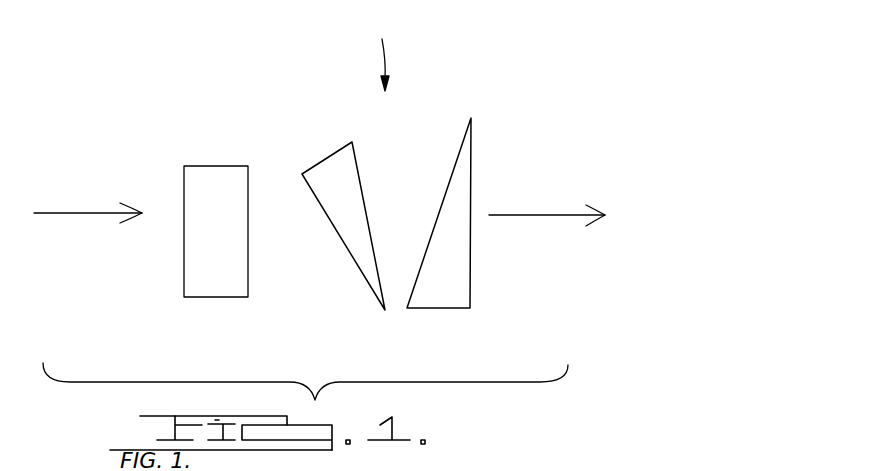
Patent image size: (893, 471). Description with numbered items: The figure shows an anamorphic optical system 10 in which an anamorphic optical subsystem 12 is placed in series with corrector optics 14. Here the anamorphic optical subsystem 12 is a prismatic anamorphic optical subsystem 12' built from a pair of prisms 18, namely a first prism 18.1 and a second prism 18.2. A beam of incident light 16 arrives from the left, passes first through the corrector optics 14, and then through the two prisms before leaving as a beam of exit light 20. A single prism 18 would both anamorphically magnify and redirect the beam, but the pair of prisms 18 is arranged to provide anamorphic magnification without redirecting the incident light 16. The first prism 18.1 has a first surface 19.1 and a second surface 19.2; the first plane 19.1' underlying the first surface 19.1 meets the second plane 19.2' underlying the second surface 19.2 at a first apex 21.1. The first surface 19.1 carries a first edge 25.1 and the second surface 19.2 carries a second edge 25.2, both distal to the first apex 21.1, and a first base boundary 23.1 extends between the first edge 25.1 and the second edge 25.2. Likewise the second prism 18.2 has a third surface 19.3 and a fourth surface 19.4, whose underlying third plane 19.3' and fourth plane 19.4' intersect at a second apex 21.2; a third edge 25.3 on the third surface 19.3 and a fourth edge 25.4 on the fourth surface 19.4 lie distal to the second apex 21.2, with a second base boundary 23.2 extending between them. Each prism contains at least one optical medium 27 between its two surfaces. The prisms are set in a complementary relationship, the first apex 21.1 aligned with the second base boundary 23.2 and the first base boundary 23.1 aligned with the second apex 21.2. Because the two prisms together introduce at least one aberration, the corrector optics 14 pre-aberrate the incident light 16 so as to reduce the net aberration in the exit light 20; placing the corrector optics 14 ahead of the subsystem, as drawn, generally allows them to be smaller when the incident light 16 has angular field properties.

The anamorphic optical system 10 is at (660, 96).
The anamorphic optical subsystem 12 is at (384, 54).
The prismatic anamorphic optical subsystem 12' is at (383, 59).
The corrector optics 14 is at (184, 266).
The beam of incident light 16 is at (77, 213).
The prism 18 is at (386, 214).
The first prism 18.1 is at (352, 258).
The second prism 18.2 is at (470, 288).
The first surface 19.1 is at (277, 221).
The first plane 19.1' is at (343, 242).
The second surface 19.2 is at (388, 226).
The second plane 19.2' is at (368, 226).
The third surface 19.3 is at (439, 187).
The third plane 19.3' is at (439, 213).
The fourth surface 19.4 is at (550, 213).
The fourth plane 19.4' is at (470, 213).
The beam of exit light 20 is at (558, 215).
The first apex 21.1 is at (385, 310).
The second apex 21.2 is at (471, 118).
The first base boundary 23.1 is at (327, 149).
The second base boundary 23.2 is at (445, 310).
The first edge 25.1 is at (303, 190).
The second edge 25.2 is at (352, 142).
The third edge 25.3 is at (407, 310).
The fourth edge 25.4 is at (470, 310).
The optical medium 27 is at (335, 207).